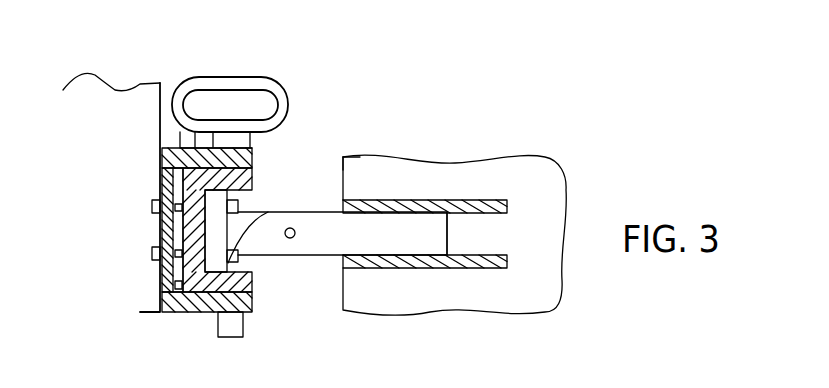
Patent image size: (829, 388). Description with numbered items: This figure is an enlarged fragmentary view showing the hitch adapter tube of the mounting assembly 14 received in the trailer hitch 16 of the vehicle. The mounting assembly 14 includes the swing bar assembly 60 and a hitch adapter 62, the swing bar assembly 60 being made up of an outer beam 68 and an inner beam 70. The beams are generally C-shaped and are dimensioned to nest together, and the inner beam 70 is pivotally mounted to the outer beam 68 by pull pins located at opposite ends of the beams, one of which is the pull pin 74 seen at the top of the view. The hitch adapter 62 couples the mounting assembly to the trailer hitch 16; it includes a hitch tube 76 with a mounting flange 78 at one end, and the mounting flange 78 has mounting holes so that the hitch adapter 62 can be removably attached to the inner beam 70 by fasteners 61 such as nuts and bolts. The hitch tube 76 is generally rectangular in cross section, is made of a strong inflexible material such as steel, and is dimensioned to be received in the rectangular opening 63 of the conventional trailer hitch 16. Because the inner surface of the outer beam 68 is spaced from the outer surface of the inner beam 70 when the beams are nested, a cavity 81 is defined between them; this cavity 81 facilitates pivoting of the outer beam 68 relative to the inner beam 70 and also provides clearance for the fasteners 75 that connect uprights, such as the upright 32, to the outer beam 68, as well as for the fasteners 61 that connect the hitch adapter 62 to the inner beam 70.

The mounting assembly 14 is at (365, 112).
The trailer hitch 16 is at (443, 200).
The upright 32 is at (112, 108).
The swing bar assembly 60 is at (255, 285).
The fasteners 61 is at (243, 207).
The hitch adapter 62 is at (338, 227).
The rectangular opening 63 is at (440, 247).
The outer beam 68 is at (252, 157).
The inner beam 70 is at (255, 182).
The pull pin 74 is at (253, 80).
The fasteners 75 is at (155, 255).
The hitch tube 76 is at (318, 228).
The mounting flange 78 is at (213, 263).
The cavity 81 is at (177, 313).